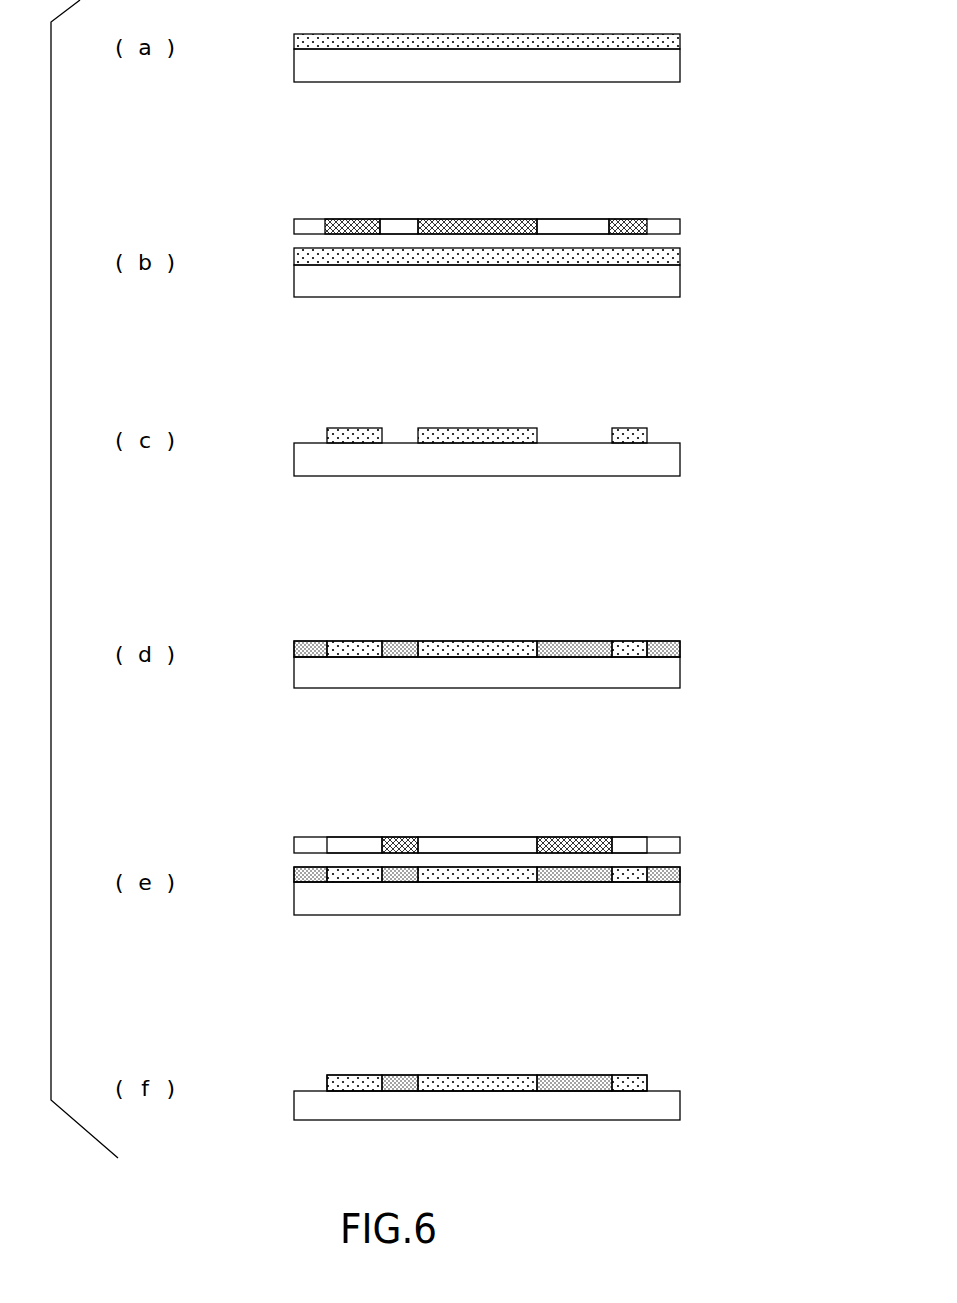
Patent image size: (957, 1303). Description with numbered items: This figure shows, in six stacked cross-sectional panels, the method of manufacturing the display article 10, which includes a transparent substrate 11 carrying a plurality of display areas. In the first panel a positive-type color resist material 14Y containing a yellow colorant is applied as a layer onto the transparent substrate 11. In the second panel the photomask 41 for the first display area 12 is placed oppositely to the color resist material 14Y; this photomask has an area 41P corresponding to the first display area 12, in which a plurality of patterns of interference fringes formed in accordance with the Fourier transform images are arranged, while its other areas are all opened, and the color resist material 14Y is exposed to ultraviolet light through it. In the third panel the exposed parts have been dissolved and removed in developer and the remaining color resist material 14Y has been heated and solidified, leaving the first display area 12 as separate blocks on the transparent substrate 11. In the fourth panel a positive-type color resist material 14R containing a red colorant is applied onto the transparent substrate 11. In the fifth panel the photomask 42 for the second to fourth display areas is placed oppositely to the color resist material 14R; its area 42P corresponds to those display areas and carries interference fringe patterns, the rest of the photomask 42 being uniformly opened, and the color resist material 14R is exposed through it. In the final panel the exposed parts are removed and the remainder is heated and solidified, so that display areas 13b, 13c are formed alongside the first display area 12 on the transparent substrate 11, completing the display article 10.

The display article 10 is at (677, 1068).
The transparent substrate 11 is at (667, 68).
The first display area 12 is at (348, 430).
The third display area 13b is at (402, 1075).
The fourth display area 13c is at (575, 1075).
The color resist material containing a yellow colorant 14Y is at (667, 40).
The color resist material containing a red colorant 14R is at (680, 870).
The photomask for the first display area 41 is at (643, 210).
The area corresponding to the first display area 41P is at (399, 225).
The photomask for the second to fourth display areas 42 is at (643, 828).
The area corresponding to the second to fourth display areas 42P is at (400, 838).